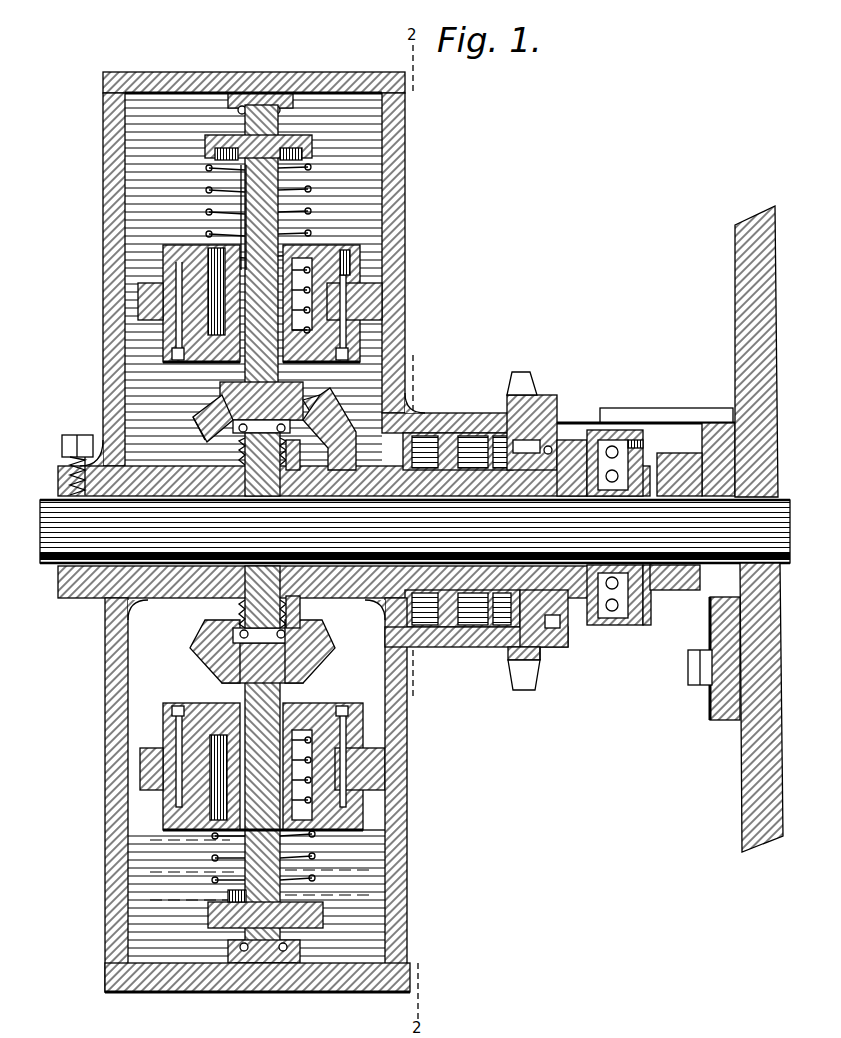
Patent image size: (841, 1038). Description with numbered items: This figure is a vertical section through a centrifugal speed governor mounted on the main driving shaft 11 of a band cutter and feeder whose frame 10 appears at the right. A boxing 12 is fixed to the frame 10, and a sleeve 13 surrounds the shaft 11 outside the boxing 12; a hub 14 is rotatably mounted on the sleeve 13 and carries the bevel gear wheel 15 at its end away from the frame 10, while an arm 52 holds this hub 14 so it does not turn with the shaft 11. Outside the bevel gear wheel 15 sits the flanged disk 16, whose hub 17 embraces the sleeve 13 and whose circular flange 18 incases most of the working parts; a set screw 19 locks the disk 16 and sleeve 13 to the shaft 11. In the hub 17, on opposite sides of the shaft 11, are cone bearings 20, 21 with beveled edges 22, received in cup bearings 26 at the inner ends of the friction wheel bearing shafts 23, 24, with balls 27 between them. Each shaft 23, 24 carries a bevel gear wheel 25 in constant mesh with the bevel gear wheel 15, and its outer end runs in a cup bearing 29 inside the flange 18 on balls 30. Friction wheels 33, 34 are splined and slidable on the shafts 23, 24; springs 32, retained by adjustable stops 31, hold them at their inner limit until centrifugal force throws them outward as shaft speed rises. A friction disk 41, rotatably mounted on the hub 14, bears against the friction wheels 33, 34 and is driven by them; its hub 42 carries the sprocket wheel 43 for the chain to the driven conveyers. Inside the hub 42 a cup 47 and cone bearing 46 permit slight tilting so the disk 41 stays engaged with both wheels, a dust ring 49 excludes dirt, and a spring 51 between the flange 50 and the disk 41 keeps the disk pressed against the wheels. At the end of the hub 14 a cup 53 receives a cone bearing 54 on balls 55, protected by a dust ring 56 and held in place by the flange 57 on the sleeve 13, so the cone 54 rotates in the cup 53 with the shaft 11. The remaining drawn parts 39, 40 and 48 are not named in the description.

The frame 10 is at (742, 745).
The main driving shaft 11 is at (42, 525).
The boxing 12 is at (652, 600).
The sleeve 13 is at (60, 568).
The hub 14 is at (388, 600).
The bevel gear wheel 15 is at (345, 432).
The disk 16 is at (106, 393).
The hub 17 is at (176, 598).
The circular flange 18 is at (198, 992).
The set screw 19 is at (62, 447).
The cone bearing 20 is at (240, 456).
The cone bearing 21 is at (286, 455).
The beveled edge 22 is at (318, 418).
The friction wheel bearing shaft 23 is at (283, 377).
The friction wheel bearing shaft 24 is at (283, 693).
The bevel gear wheel 25 is at (212, 437).
The cup bearing 26 is at (222, 400).
The balls 27 is at (196, 416).
The cup bearing 29 is at (258, 100).
The balls 30 is at (238, 105).
The stop 31 is at (312, 146).
The spring 32 is at (305, 196).
The friction wheel 33 is at (128, 308).
The friction wheel 34 is at (385, 762).
The pin 39 is at (357, 262).
The base plate 40 is at (363, 822).
The friction disk 41 is at (405, 196).
The hub 42 is at (458, 640).
The sprocket wheel 43 is at (518, 682).
The cone bearing 46 is at (553, 648).
The cup 47 is at (562, 628).
The projection 48 is at (543, 660).
The dust ring 49 is at (550, 432).
The flange 50 is at (488, 433).
The spring 51 is at (448, 433).
The arm 52 is at (576, 440).
The cup 53 is at (612, 430).
The cone bearing 54 is at (652, 460).
The balls 55 is at (640, 600).
The dust ring 56 is at (645, 436).
The flange 57 is at (665, 574).